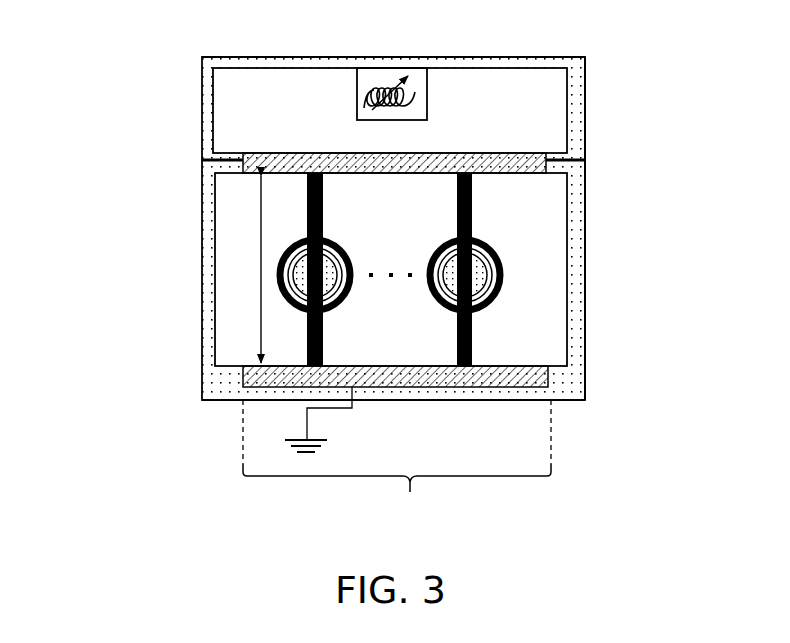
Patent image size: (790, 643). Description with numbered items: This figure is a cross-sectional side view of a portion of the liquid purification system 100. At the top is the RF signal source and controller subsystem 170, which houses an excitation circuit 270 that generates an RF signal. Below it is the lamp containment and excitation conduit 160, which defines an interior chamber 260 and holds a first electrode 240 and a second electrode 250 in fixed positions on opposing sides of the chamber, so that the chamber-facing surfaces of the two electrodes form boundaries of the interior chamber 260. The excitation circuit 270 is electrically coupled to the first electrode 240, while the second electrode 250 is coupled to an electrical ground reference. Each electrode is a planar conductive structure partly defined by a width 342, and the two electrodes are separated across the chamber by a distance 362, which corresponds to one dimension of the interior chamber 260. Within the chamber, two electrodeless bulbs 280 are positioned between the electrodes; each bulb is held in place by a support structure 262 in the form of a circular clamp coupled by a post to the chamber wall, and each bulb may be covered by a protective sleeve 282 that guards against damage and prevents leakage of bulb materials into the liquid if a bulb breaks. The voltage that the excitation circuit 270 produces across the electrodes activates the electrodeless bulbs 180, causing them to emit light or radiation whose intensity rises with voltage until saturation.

The liquid purification system 100 is at (138, 62).
The RF signal source and controller subsystem 170 is at (202, 90).
The excitation circuit 270 is at (240, 105).
The first electrode 240 is at (447, 160).
The interior chamber 260 is at (543, 197).
The protective sleeve 282 is at (322, 245).
The electrodeless bulb 280 is at (318, 273).
The distance 362 is at (261, 310).
The support structure 262 is at (323, 333).
The electrodeless bulb 180 is at (651, 228).
The lamp containment and excitation conduit 160 is at (202, 362).
The second electrode 250 is at (430, 378).
The width 342 is at (397, 460).